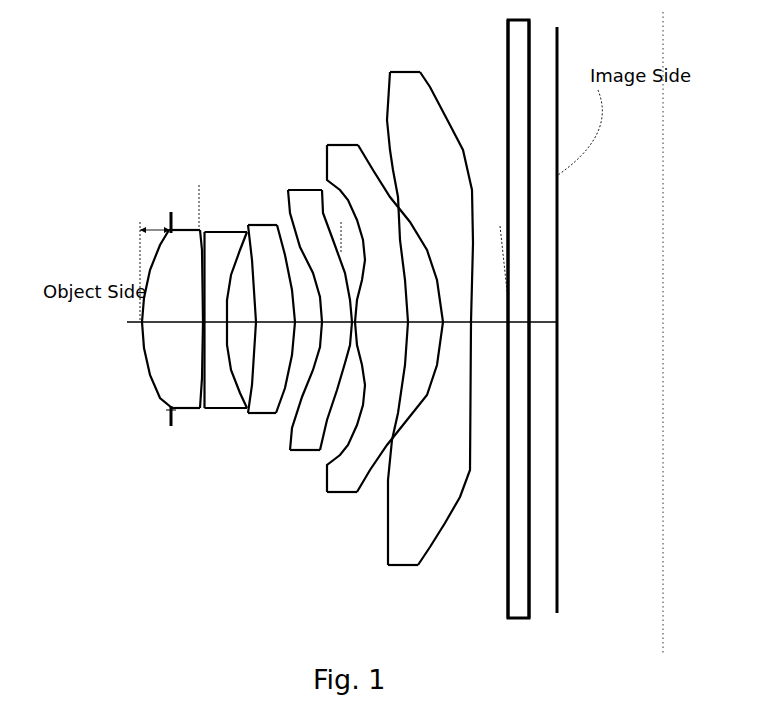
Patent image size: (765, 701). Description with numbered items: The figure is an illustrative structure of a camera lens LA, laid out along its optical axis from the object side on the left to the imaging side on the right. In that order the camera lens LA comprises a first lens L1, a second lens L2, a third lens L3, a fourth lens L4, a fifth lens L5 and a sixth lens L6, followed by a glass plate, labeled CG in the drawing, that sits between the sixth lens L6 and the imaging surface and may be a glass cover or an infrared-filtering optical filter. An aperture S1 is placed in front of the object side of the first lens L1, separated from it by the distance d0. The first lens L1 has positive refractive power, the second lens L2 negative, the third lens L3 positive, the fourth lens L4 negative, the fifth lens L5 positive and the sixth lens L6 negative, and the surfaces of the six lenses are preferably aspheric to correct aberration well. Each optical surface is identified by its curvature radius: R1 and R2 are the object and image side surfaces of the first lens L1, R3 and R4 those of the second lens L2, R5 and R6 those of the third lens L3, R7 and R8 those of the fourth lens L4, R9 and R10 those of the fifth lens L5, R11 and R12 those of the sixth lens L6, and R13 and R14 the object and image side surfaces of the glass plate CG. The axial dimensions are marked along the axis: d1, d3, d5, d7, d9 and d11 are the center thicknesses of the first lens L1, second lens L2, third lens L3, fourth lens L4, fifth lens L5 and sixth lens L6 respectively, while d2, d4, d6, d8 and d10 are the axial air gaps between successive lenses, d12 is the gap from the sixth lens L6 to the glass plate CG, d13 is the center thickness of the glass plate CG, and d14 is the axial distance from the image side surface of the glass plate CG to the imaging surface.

The camera lens LA is at (161, 109).
The aperture S1 is at (172, 216).
The first lens L1 is at (162, 332).
The second lens L2 is at (211, 335).
The third lens L3 is at (253, 340).
The fourth lens L4 is at (298, 332).
The fifth lens L5 is at (360, 333).
The sixth lens L6 is at (405, 327).
The cover glass CG is at (483, 322).
The curvature radius of the first lens object side surface R1 is at (143, 336).
The curvature radius of the first lens image side surface R2 is at (199, 336).
The curvature radius of the second lens object side surface R3 is at (205, 340).
The curvature radius of the second lens image side surface R4 is at (228, 346).
The curvature radius of the third lens object side surface R5 is at (255, 352).
The curvature radius of the third lens image side surface R6 is at (292, 358).
The curvature radius of the fourth lens object side surface R7 is at (316, 374).
The curvature radius of the fourth lens image side surface R8 is at (345, 380).
The curvature radius of the fifth lens object side surface R9 is at (360, 386).
The curvature radius of the fifth lens image side surface R10 is at (402, 382).
The curvature radius of the sixth lens object side surface R11 is at (424, 402).
The curvature radius of the sixth lens image side surface R12 is at (466, 380).
The curvature radius of the glass plate object side surface R13 is at (470, 472).
The curvature radius of the glass plate image side surface R14 is at (507, 472).
The distance from the aperture to the first lens d0 is at (155, 267).
The center thickness of the first lens d1 is at (164, 312).
The distance from the first lens to the second lens d2 is at (202, 202).
The center thickness of the second lens d3 is at (214, 312).
The axial distance from the second lens to the third lens d4 is at (238, 312).
The center thickness of the third lens d5 is at (272, 312).
The axial distance from the third lens to the fourth lens d6 is at (307, 312).
The center thickness of the fourth lens d7 is at (335, 312).
The axial distance from the fourth lens to the fifth lens d8 is at (340, 230).
The center thickness of the fifth lens d9 is at (385, 312).
The axial distance from the fifth lens to the sixth lens d10 is at (425, 312).
The center thickness of the sixth lens d11 is at (455, 312).
The axial distance from the sixth lens to the glass plate d12 is at (486, 312).
The center thickness of the glass plate d13 is at (496, 257).
The axial distance from the glass plate to the imaging surface d14 is at (545, 312).